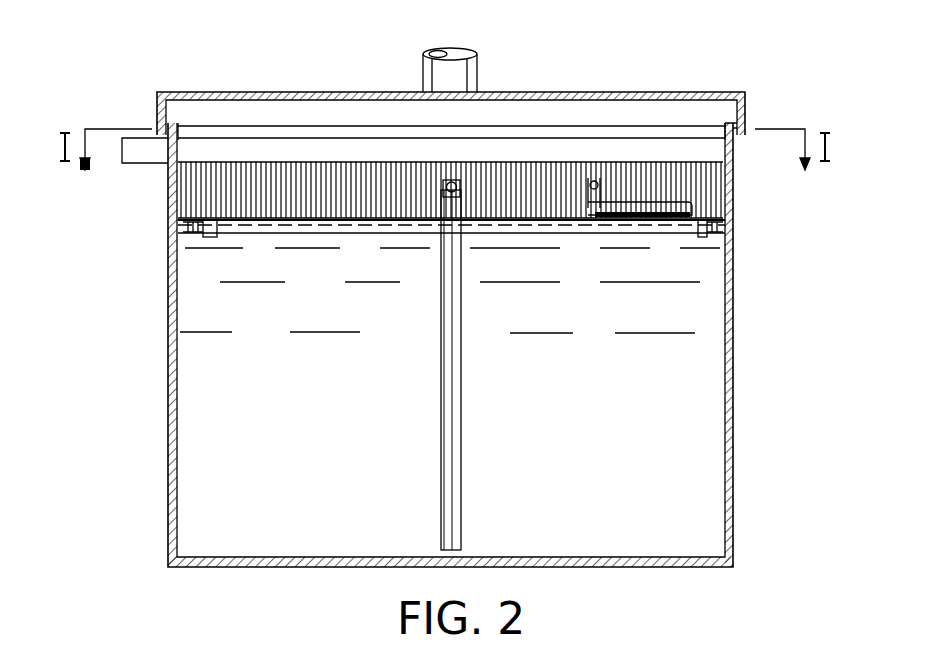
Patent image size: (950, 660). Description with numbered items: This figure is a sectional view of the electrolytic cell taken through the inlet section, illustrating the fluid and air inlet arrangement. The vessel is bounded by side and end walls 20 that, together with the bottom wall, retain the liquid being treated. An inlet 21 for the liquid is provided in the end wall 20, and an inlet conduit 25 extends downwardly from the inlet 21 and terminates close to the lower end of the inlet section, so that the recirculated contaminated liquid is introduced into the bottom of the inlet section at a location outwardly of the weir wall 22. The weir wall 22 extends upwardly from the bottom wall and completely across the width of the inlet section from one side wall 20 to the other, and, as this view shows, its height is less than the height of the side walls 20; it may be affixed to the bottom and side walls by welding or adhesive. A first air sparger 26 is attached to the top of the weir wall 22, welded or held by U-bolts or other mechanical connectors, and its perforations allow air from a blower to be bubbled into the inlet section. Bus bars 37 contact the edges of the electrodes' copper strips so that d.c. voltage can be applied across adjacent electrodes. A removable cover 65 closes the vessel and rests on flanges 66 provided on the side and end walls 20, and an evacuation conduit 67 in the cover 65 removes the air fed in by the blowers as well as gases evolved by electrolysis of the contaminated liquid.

The side and end walls 20 is at (168, 327).
The inlet 21 is at (452, 182).
The weir wall 22 is at (623, 454).
The inlet conduit 25 is at (462, 408).
The first air sparger 26 is at (342, 225).
The bus bars 37 is at (715, 152).
The removable cover 65 is at (725, 90).
The flanges 66 is at (735, 133).
The evacuation conduit 67 is at (478, 64).